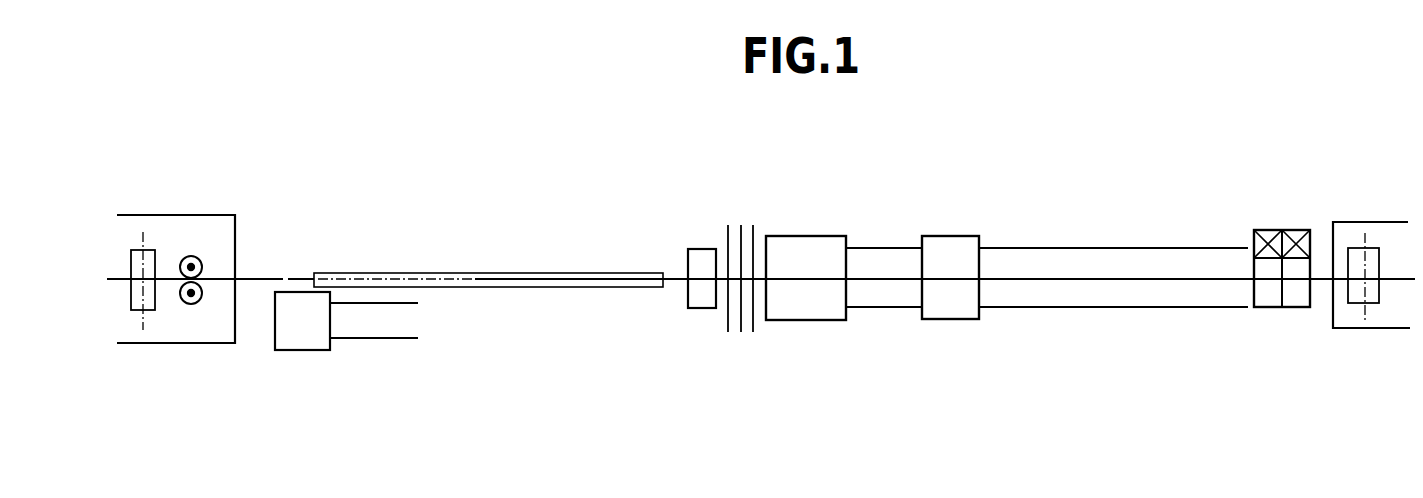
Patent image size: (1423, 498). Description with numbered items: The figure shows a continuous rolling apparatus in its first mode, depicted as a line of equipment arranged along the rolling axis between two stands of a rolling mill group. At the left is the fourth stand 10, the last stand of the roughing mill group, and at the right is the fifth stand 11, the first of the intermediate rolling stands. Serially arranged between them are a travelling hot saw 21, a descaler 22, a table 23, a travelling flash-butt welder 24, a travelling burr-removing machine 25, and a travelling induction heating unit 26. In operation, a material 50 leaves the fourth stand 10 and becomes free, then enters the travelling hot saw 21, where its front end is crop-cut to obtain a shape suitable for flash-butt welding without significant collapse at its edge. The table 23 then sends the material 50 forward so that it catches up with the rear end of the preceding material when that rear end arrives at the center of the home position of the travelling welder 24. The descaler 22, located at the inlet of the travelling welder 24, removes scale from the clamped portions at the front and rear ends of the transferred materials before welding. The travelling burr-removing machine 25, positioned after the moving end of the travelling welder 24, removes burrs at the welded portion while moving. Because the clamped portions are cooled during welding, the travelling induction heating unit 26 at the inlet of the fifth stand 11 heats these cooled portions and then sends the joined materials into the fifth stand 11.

The fourth stand 10 is at (207, 215).
The material 50 is at (173, 280).
The travelling hot saw 21 is at (302, 350).
The table 23 is at (537, 287).
The descaler 22 is at (687, 292).
The travelling flash-butt welder 24 is at (820, 320).
The travelling burr-removing machine 25 is at (957, 319).
The travelling induction heating unit 26 is at (1270, 307).
The fifth stand 11 is at (1340, 222).